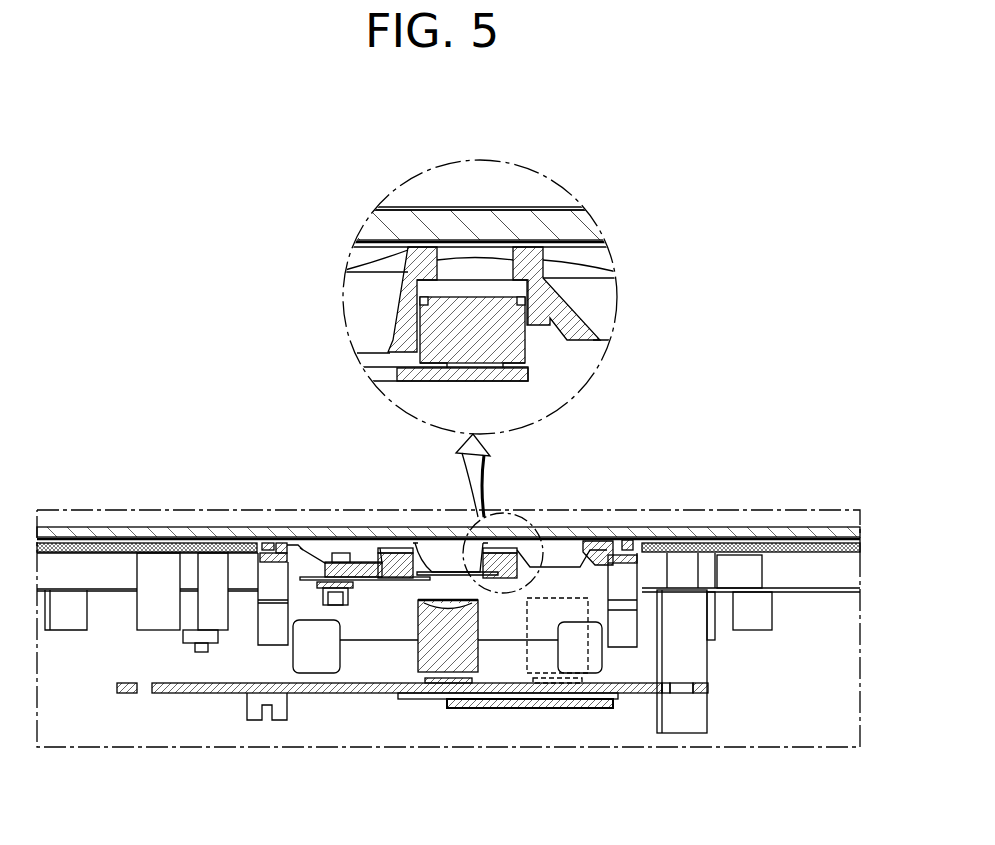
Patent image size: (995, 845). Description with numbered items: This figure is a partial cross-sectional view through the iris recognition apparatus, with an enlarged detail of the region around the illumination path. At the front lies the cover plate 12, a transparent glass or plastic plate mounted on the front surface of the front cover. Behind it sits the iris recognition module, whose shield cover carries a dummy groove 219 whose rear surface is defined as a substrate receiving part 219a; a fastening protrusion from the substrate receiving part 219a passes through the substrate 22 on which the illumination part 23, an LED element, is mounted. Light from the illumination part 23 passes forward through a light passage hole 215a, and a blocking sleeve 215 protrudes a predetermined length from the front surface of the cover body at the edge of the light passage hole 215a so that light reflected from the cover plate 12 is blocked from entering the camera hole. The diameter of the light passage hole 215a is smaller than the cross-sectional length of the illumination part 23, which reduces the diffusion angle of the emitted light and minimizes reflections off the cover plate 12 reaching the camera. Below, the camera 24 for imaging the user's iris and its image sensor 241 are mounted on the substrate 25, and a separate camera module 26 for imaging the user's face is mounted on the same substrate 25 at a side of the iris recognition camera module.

The cover plate 12 is at (138, 531).
The substrate 22 is at (300, 560).
The substrate receiving part 219a is at (313, 560).
The dummy groove 219 is at (360, 546).
The blocking sleeve 215 is at (500, 563).
The light passage hole 215a is at (462, 272).
The illumination part 23 is at (392, 568).
The camera 24 is at (440, 660).
The image sensor 241 is at (455, 700).
The substrate 25 is at (200, 694).
The camera module 26 is at (588, 655).